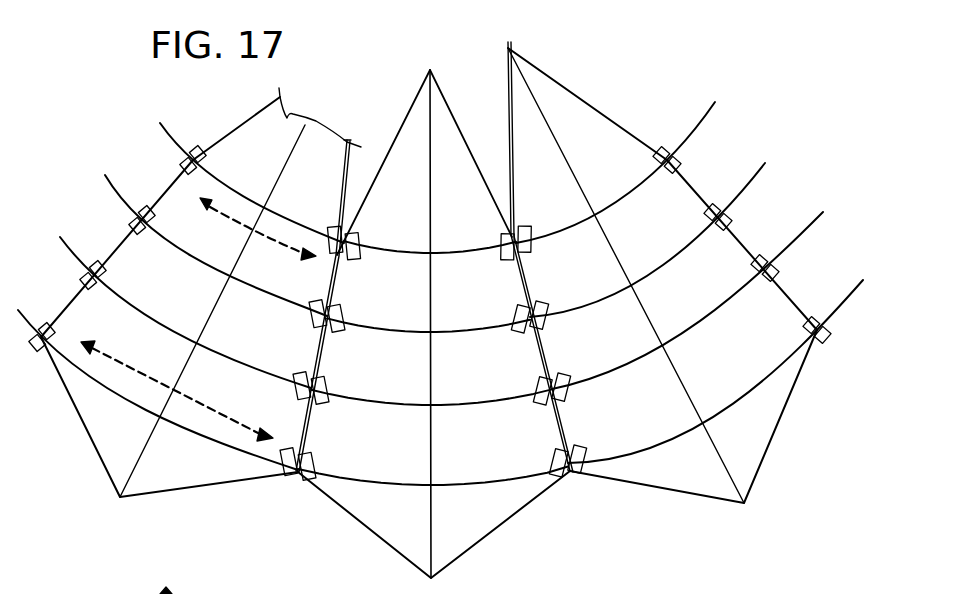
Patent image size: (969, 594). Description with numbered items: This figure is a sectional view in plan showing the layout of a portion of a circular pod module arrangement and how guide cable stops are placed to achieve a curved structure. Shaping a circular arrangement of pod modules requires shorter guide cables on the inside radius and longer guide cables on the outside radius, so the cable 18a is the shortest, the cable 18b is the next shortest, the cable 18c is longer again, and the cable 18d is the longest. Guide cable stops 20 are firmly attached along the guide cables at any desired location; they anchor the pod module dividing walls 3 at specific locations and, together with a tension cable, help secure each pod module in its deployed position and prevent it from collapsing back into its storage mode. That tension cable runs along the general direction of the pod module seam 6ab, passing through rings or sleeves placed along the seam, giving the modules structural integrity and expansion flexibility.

The guide cable stop 20 is at (352, 240).
The pod module dividing wall 3 is at (570, 480).
The pod module seam 6ab is at (744, 503).
The guide cable 18a is at (698, 154).
The guide cable 18b is at (747, 213).
The guide cable 18c is at (795, 264).
The guide cable 18d is at (846, 326).